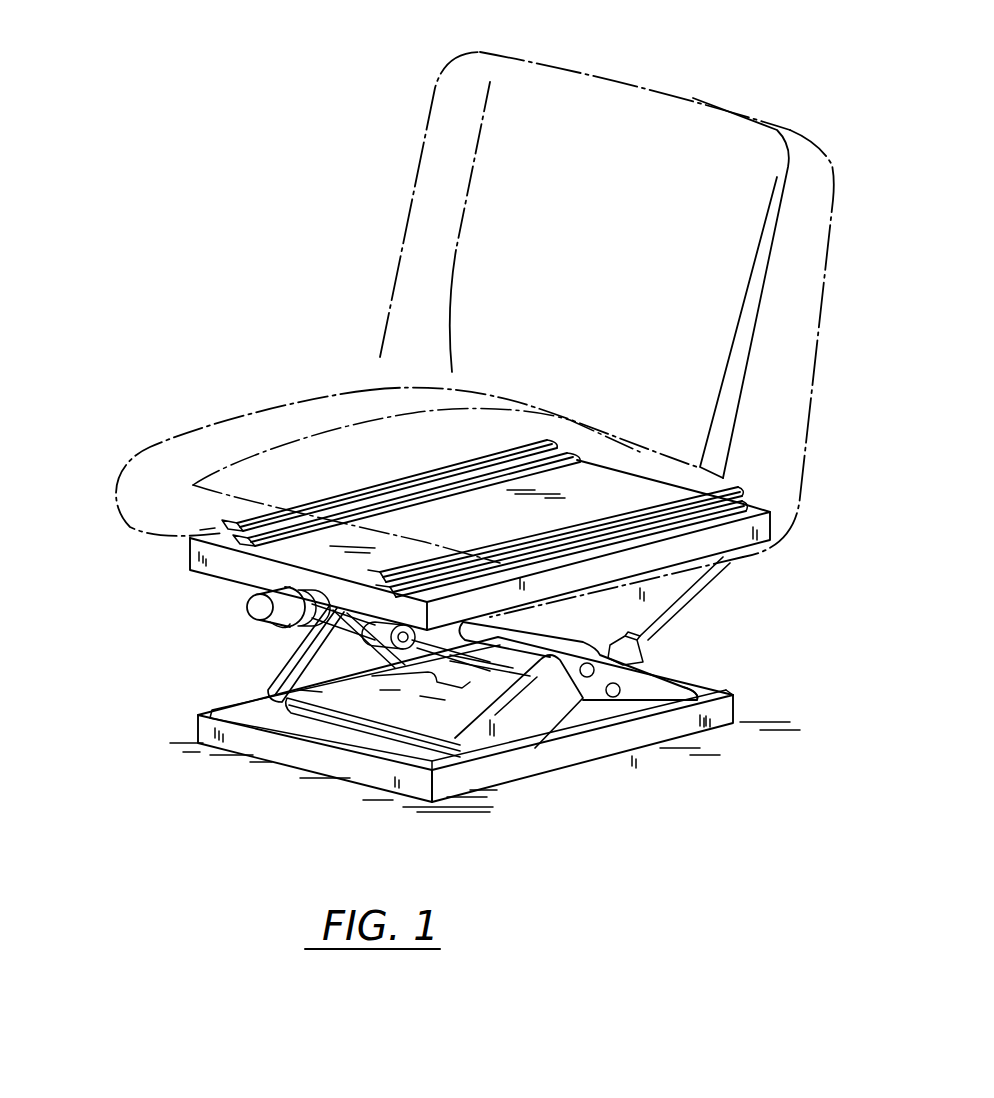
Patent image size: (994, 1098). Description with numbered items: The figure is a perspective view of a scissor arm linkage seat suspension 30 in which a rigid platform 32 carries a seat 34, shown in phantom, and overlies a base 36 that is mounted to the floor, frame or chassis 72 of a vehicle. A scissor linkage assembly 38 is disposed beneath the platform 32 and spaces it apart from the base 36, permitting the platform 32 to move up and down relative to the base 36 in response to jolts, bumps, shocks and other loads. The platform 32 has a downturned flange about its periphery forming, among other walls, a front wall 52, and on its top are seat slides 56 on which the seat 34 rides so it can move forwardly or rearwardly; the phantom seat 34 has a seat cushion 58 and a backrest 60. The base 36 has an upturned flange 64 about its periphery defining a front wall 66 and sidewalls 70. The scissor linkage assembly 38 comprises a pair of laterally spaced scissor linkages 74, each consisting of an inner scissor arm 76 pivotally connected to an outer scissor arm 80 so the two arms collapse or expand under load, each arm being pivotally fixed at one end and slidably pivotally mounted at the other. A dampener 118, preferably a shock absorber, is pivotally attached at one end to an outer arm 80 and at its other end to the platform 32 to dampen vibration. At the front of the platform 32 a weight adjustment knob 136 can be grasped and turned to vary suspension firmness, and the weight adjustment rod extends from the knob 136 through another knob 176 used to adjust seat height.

The seat suspension 30 is at (168, 662).
The platform 32 is at (758, 530).
The seat 34 is at (392, 293).
The base 36 is at (547, 758).
The scissor linkage assembly 38 is at (727, 622).
The front wall 52 is at (190, 563).
The seat slides 56 is at (222, 527).
The seat cushion 58 is at (217, 427).
The backrest 60 is at (693, 95).
The upturned flange 64 is at (350, 772).
The front wall 66 is at (410, 788).
The sidewalls 70 is at (738, 706).
The vehicle chassis 72 is at (747, 724).
The scissor linkage 74 is at (637, 697).
The inner scissor arm 76 is at (268, 692).
The outer scissor arm 80 is at (662, 684).
The dampener 118 is at (642, 651).
The weight adjustment knob 136 is at (248, 616).
The height adjustment knob 176 is at (287, 625).